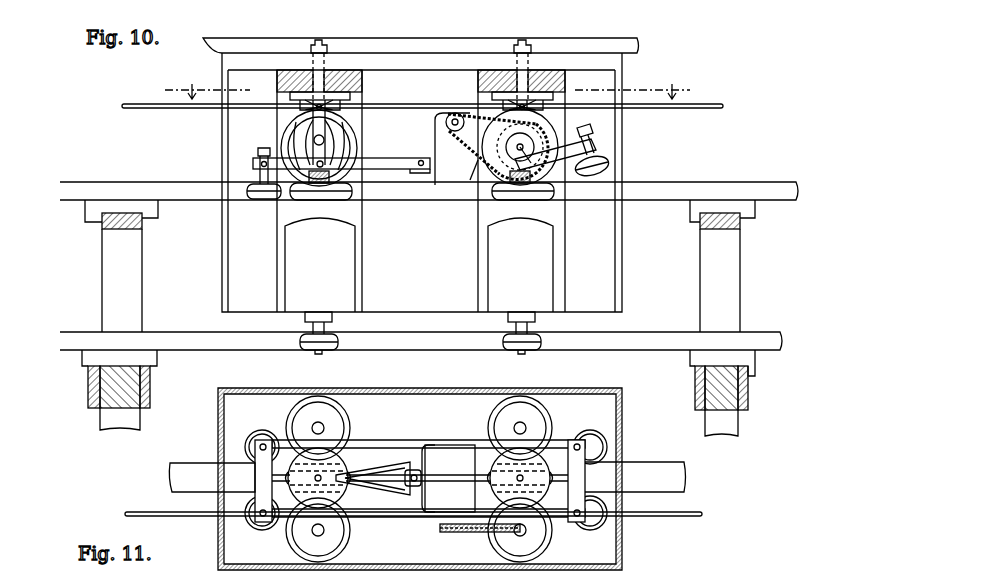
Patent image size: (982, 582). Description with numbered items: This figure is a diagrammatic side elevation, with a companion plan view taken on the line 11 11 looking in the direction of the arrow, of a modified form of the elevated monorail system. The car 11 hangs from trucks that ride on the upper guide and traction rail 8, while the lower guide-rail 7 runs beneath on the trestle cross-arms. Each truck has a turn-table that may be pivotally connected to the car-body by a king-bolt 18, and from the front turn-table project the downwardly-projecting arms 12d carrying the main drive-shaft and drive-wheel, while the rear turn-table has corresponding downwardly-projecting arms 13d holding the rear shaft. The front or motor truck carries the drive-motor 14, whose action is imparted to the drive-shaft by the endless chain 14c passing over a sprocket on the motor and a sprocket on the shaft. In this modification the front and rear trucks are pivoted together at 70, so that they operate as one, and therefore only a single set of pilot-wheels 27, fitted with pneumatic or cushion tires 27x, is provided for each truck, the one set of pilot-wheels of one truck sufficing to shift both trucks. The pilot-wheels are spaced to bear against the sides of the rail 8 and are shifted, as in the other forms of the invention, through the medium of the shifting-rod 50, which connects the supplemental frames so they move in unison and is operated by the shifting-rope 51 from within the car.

In FIG. 10, the lower guide-rail 7 is at (188, 338).
In FIG. 10, the upper guide and traction rail 8 is at (167, 188).
In FIG. 11, the upper guide and traction rail 8 is at (427, 477).
In FIG. 10, the car 11 is at (435, 87).
In FIG. 10, the downwardly-projecting arms 12d is at (333, 121).
In FIG. 10, the downwardly-projecting arms 13d is at (548, 128).
In FIG. 10, the drive-motor 14 is at (452, 149).
In FIG. 11, the drive-motor 14 is at (448, 478).
In FIG. 10, the endless chain 14c is at (466, 173).
In FIG. 10, the king-bolt 18 is at (320, 62).
In FIG. 10, the pilot-wheels 27 is at (258, 176).
In FIG. 11, the pilot-wheels 27 is at (262, 440).
In FIG. 10, the pneumatic or cushion tires 27x is at (250, 190).
In FIG. 11, the pneumatic or cushion tires 27x is at (254, 433).
In FIG. 10, the shifting-rod 50 is at (414, 108).
In FIG. 11, the shifting-rod 50 is at (454, 526).
In FIG. 10, the shifting-rope 51 is at (422, 109).
In FIG. 11, the shifting-rope 51 is at (413, 522).
In FIG. 10, the pivot 70 is at (421, 158).
In FIG. 11, the pivot 70 is at (414, 469).